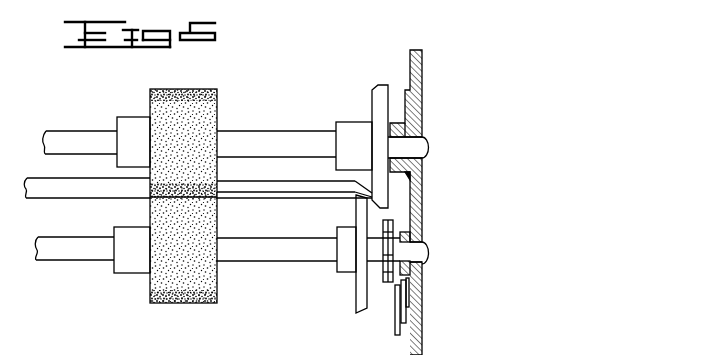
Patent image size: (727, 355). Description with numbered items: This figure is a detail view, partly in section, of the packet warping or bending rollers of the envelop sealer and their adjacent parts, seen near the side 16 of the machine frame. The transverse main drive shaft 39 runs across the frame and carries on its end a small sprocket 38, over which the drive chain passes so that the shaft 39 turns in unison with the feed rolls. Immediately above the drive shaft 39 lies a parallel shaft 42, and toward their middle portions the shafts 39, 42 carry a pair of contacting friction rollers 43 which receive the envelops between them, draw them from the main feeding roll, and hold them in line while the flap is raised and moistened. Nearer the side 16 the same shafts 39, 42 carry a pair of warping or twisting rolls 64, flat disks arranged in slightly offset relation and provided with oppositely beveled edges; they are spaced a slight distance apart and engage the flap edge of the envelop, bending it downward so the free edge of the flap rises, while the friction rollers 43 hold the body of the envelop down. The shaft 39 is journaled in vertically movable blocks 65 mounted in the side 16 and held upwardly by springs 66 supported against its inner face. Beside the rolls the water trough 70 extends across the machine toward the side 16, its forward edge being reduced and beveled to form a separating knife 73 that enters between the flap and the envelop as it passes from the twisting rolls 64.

The side of the frame 16 is at (423, 73).
The small sprocket 38 is at (393, 227).
The shaft 39 is at (290, 247).
The shaft 42 is at (284, 143).
The friction rollers 43 is at (160, 218).
The warping or twisting rolls 64 is at (382, 190).
The vertically movable blocks 65 is at (423, 240).
The springs 66 is at (400, 280).
The water trough 70 is at (70, 192).
The separating knife 73 is at (277, 193).